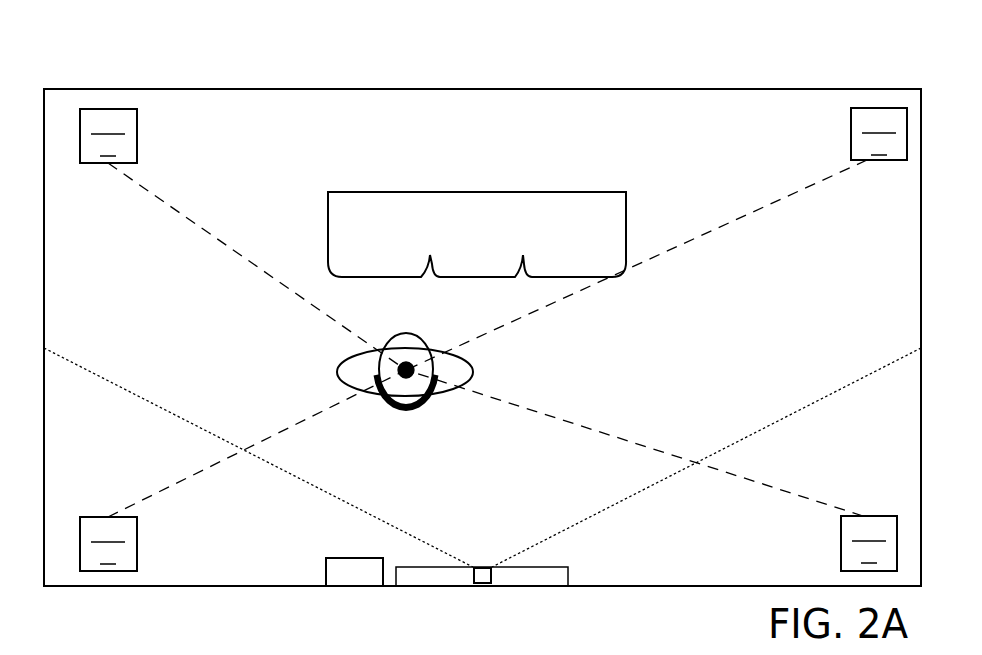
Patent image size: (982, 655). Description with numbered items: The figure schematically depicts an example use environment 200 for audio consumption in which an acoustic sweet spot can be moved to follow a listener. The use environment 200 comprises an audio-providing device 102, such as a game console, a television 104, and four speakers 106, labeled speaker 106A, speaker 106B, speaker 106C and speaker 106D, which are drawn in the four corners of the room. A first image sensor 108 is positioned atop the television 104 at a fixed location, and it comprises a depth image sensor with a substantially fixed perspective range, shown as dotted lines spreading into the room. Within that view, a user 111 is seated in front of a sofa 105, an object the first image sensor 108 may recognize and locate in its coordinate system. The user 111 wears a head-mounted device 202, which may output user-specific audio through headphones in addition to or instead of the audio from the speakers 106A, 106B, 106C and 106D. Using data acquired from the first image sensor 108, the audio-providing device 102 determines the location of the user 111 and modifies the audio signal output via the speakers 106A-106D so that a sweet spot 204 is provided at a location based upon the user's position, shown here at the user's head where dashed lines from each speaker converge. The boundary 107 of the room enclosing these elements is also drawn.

The use environment 200 is at (728, 58).
The speakers 106 is at (493, 339).
The speaker 106A is at (108, 136).
The speaker 106B is at (879, 134).
The speaker 106C is at (108, 544).
The speaker 106D is at (869, 543).
The sofa 105 is at (393, 230).
The user 111 is at (375, 380).
The sweet spot 204 is at (408, 362).
The head-mounted device 202 is at (436, 404).
The audio-providing device 102 is at (370, 583).
The television 104 is at (424, 589).
The first image sensor 108 is at (484, 589).
The room boundary 107 is at (712, 587).